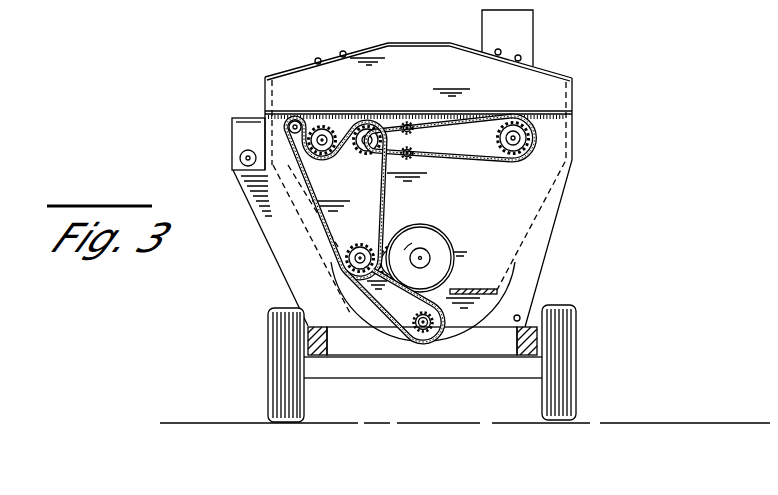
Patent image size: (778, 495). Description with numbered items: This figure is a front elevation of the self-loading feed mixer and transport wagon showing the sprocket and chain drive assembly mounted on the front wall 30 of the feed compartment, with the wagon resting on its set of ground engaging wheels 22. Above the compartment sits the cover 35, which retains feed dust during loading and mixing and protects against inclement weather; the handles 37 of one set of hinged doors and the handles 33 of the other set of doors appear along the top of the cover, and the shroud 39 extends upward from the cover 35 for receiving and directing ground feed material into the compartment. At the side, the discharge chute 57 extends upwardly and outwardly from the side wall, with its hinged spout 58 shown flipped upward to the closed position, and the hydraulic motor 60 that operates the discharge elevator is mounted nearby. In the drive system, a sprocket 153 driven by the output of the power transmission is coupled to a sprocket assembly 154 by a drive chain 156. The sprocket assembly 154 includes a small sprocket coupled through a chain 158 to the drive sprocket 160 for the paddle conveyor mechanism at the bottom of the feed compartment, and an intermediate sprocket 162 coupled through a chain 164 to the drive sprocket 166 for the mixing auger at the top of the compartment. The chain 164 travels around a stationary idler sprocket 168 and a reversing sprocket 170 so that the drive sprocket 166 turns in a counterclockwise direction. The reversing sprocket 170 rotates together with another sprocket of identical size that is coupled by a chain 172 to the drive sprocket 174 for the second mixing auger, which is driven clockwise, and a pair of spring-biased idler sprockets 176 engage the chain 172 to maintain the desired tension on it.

The ground engaging wheels 22 is at (272, 353).
The front wall 30 is at (574, 152).
The handle 33 is at (521, 58).
The cover 35 is at (383, 42).
The handle 37 is at (341, 52).
The shroud 39 is at (527, 30).
The discharge chute 57 is at (238, 179).
The hinged spout 58 is at (238, 122).
The hydraulic motor 60 is at (240, 153).
The sprocket 153 is at (425, 330).
The sprocket assembly 154 is at (362, 292).
The drive chain 156 is at (392, 286).
The chain 158 is at (450, 276).
The drive sprocket 160 is at (445, 256).
The intermediate sprocket 162 is at (338, 250).
The chain 164 is at (320, 200).
The drive sprocket 166 is at (287, 122).
The stationary idler sprocket 168 is at (245, 128).
The reversing sprocket 170 is at (315, 123).
The chain 172 is at (487, 156).
The drive sprocket 174 is at (530, 134).
The spring-biased idler sprockets 176 is at (407, 121).